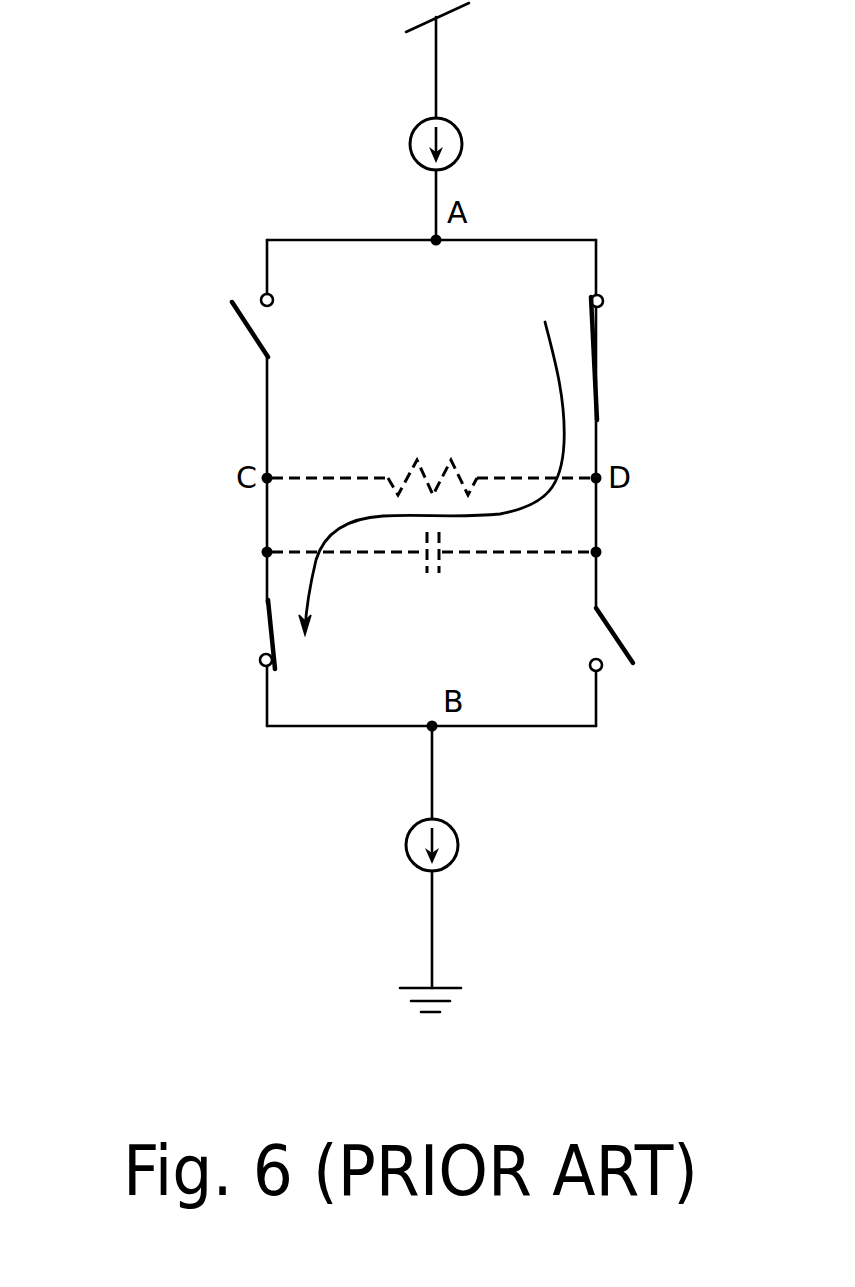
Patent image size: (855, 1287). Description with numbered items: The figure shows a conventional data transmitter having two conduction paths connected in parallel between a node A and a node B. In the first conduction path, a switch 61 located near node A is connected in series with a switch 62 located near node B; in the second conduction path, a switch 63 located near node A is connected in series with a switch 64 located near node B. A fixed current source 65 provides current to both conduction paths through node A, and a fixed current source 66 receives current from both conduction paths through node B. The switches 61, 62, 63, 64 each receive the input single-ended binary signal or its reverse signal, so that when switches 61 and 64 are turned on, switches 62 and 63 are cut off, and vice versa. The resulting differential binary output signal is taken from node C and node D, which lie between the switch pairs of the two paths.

The switch 61 is at (600, 327).
The switch 62 is at (613, 628).
The switch 63 is at (248, 335).
The switch 64 is at (267, 638).
The fixed current source 65 is at (457, 126).
The fixed current source 66 is at (452, 825).